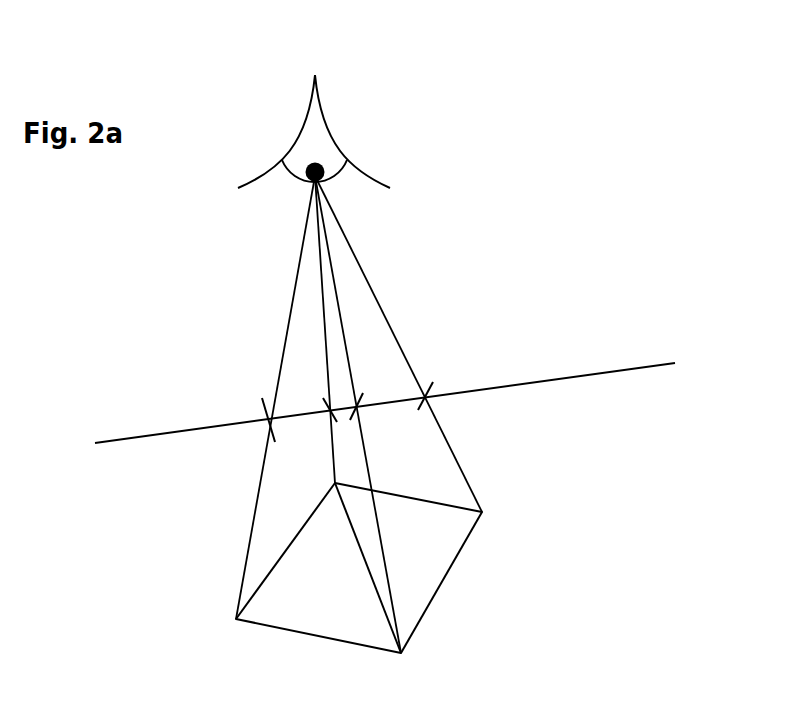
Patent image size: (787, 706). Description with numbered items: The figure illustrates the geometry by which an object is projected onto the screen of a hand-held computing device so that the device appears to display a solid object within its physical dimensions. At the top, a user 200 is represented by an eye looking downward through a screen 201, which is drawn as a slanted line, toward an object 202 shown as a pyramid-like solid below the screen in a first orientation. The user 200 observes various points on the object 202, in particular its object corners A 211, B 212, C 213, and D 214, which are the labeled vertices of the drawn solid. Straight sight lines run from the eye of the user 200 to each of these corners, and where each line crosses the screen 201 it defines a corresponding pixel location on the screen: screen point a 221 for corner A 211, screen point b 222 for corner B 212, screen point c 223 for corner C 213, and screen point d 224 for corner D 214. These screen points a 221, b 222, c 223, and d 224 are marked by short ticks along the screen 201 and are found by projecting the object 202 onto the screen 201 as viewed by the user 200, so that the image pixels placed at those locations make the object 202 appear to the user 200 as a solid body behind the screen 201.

The user 200 is at (387, 95).
The screen 201 is at (420, 336).
The object 202 is at (461, 568).
The object corner A 211 is at (234, 465).
The object corner B 212 is at (162, 659).
The object corner C 213 is at (479, 646).
The object corner D 214 is at (562, 474).
The screen point a 221 is at (259, 349).
The screen point b 222 is at (226, 377).
The screen point c 223 is at (448, 338).
The screen point d 224 is at (482, 355).